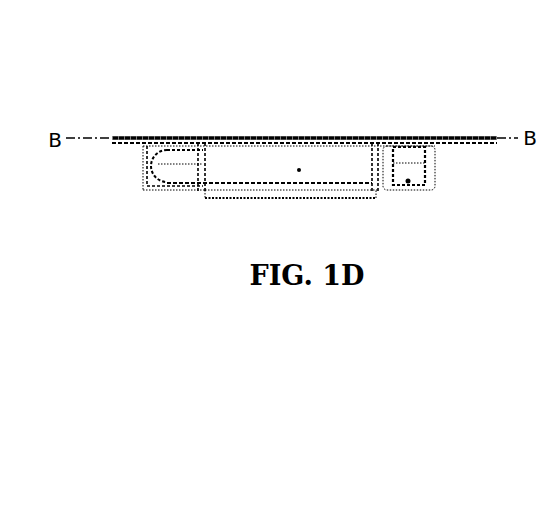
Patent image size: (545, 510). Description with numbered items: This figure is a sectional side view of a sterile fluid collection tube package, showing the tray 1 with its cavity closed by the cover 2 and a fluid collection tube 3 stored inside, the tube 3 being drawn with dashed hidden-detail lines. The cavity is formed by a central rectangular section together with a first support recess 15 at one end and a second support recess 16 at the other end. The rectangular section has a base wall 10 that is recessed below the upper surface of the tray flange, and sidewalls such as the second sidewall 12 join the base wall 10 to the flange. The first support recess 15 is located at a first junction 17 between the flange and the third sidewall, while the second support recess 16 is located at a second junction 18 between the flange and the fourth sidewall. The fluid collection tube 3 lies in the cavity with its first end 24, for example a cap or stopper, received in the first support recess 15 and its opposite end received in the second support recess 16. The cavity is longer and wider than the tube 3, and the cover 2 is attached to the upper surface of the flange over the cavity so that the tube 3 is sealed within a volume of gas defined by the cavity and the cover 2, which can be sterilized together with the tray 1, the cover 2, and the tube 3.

The tray 1 is at (137, 143).
The cover 2 is at (136, 131).
The fluid collection tube 3 is at (358, 140).
The base wall 10 is at (255, 200).
The second sidewall 12 is at (300, 169).
The first support recess 15 is at (408, 186).
The second support recess 16 is at (162, 190).
The first junction 17 is at (377, 191).
The second junction 18 is at (201, 191).
The first end 24 is at (413, 190).